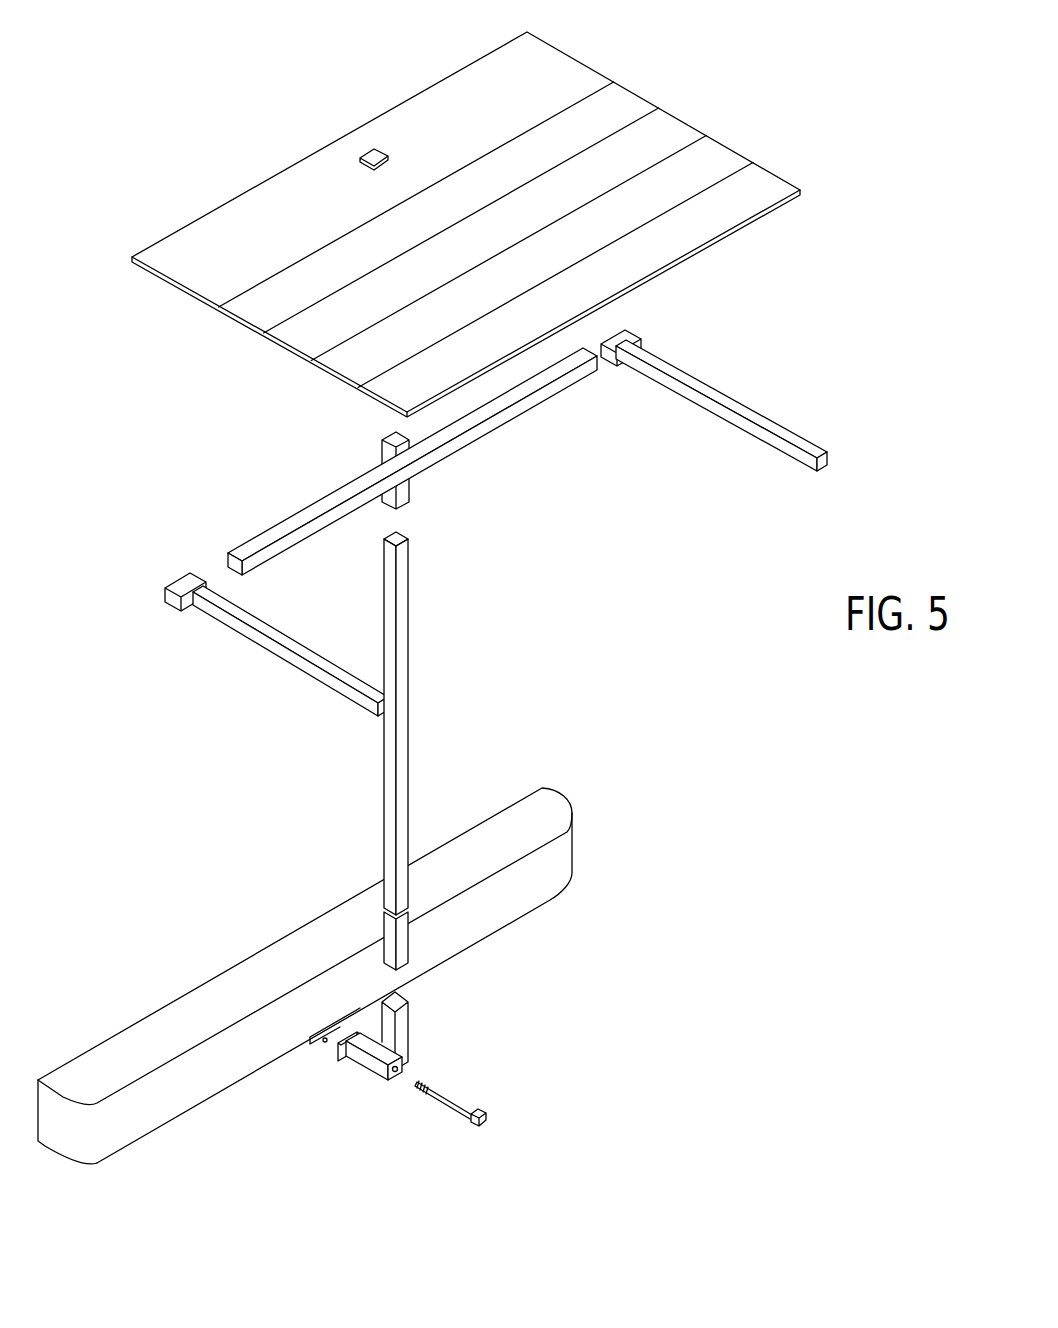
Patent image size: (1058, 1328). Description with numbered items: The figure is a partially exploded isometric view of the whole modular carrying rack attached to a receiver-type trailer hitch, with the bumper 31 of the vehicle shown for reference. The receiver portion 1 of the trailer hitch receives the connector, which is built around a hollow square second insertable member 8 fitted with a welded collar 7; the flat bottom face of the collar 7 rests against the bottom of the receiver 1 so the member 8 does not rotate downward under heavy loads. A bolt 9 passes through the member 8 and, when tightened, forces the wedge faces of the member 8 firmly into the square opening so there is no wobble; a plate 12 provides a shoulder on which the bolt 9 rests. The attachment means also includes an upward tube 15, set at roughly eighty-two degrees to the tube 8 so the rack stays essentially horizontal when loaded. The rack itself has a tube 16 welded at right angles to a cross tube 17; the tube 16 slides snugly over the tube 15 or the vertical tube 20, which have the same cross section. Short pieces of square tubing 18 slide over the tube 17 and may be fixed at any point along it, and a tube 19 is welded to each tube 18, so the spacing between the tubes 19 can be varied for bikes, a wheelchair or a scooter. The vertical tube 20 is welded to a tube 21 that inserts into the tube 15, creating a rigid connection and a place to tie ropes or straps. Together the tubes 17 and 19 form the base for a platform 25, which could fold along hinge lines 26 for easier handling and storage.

The receiver portion of a trailer hitch 1 is at (315, 1047).
The collar 7 is at (338, 1067).
The second insertable member 8 is at (370, 1077).
The bolt 9 is at (457, 1093).
The plate 12 is at (397, 1080).
The tube 15 is at (415, 1050).
The tube 16 is at (412, 493).
The tube 17 is at (490, 440).
The short piece of square tubing 18 is at (635, 332).
The tube 19 is at (712, 378).
The vertical tube 20 is at (408, 665).
The tube 21 is at (412, 945).
The platform 25 is at (287, 352).
The hinge lines 26 is at (398, 363).
The bumper 31 is at (177, 1118).